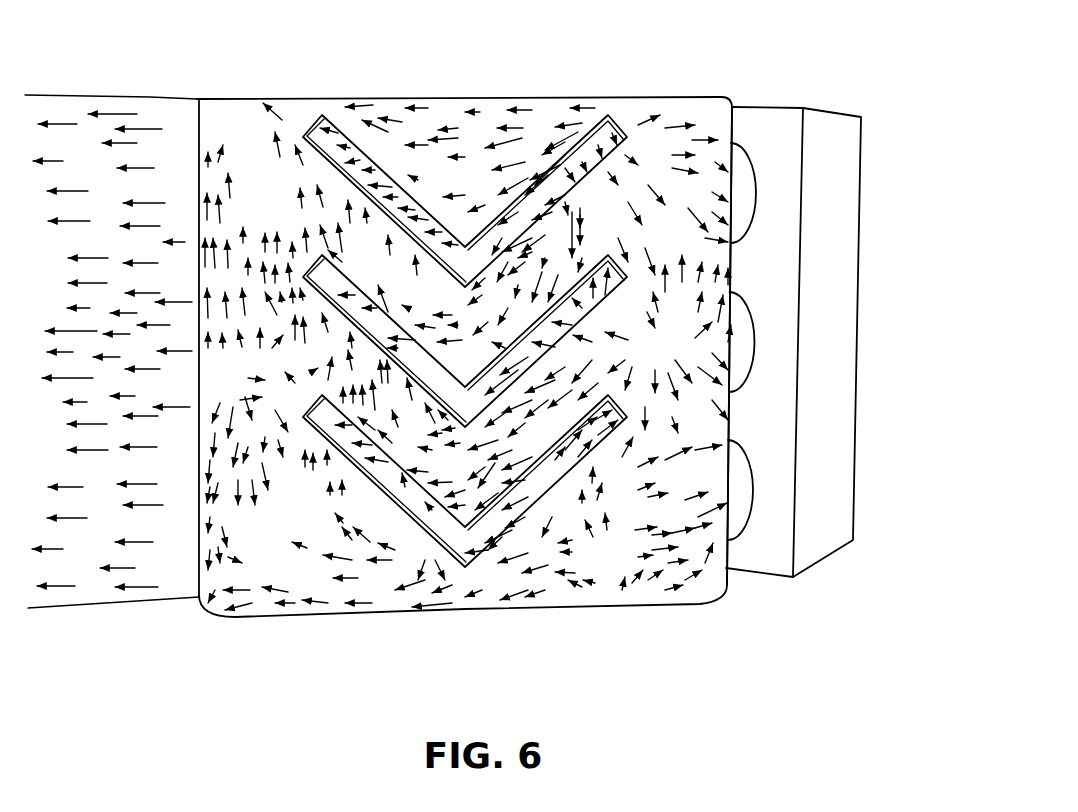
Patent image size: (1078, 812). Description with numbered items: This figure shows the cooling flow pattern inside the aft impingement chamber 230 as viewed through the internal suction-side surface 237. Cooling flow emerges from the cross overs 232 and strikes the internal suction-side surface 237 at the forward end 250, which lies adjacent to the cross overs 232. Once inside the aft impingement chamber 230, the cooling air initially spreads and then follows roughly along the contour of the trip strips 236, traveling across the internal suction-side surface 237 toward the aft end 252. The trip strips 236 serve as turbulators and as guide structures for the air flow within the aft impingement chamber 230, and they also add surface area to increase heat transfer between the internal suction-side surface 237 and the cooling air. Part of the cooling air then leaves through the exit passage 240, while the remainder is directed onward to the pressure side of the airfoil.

The aft impingement chamber 230 is at (463, 97).
The cross overs 232 is at (750, 190).
The trip strips 236 is at (610, 112).
The internal suction-side surface 237 is at (670, 108).
The exit passage 240 is at (172, 110).
The forward end 250 is at (722, 110).
The aft end 252 is at (228, 110).